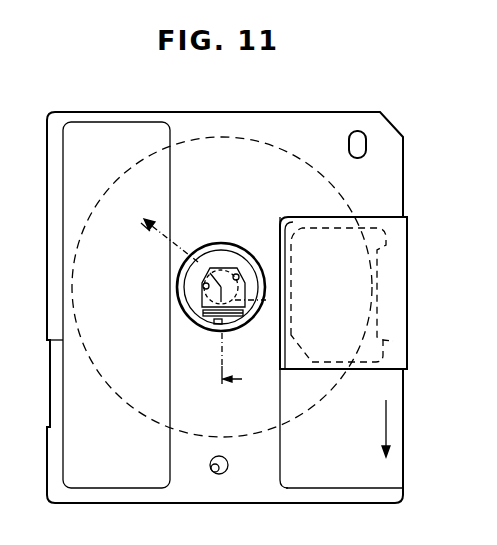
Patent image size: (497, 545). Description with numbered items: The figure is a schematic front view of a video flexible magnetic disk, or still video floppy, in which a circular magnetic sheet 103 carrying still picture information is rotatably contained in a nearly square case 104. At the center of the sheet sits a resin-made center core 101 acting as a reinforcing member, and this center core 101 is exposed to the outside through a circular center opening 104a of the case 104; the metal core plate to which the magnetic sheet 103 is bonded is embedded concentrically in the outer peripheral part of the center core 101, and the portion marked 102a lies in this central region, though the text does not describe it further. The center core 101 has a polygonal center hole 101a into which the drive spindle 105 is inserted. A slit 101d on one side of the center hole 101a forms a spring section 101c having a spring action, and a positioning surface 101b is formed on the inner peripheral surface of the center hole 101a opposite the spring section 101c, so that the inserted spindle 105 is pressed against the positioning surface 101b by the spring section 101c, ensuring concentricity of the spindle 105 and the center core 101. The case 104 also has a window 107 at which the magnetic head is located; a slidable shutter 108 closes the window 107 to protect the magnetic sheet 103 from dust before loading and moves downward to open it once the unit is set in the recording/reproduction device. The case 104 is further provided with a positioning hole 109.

The center core 101 is at (213, 244).
The center hole 101a is at (240, 326).
The positioning surface 101b is at (203, 287).
The spring section 101c is at (201, 304).
The slit 101d is at (210, 321).
The spoke portion 102a is at (214, 325).
The magnetic sheet 103 is at (272, 143).
The case 104 is at (404, 181).
The center opening 104a is at (238, 246).
The drive spindle 105 is at (266, 300).
The window 107 is at (393, 341).
The shutter 108 is at (408, 315).
The positioning hole 109 is at (358, 132).